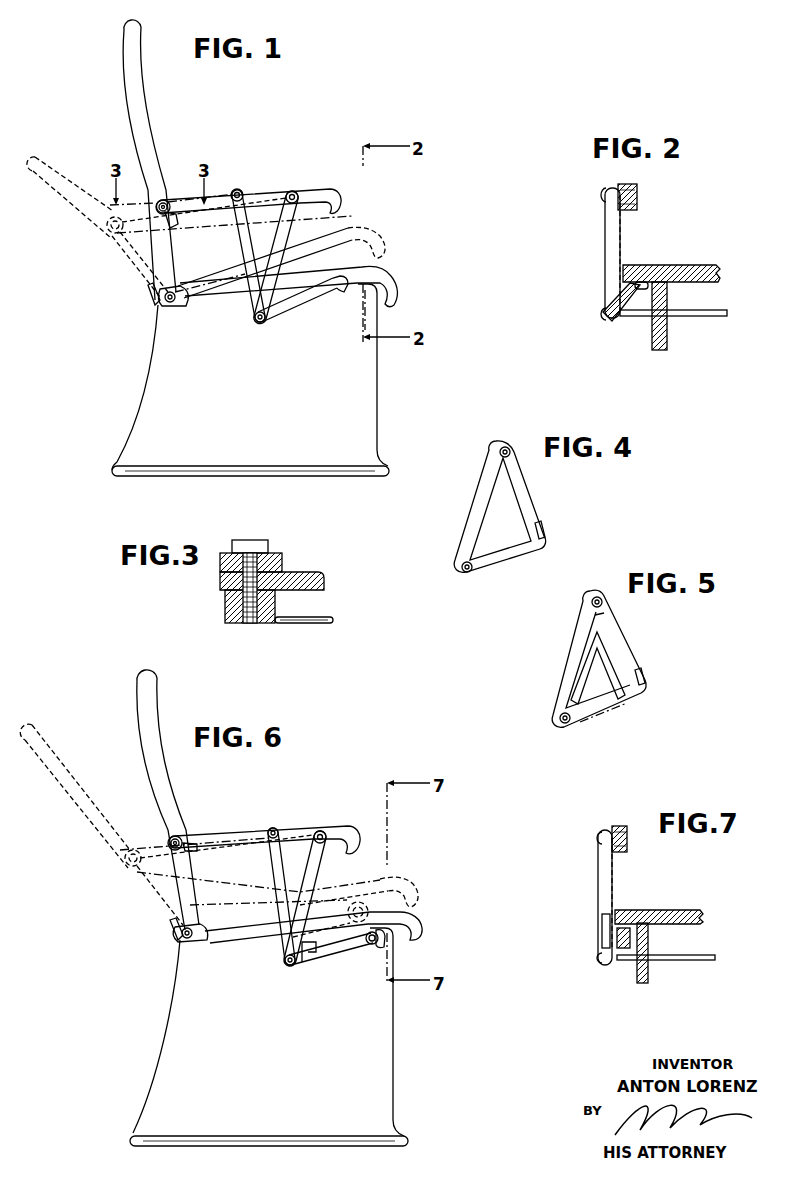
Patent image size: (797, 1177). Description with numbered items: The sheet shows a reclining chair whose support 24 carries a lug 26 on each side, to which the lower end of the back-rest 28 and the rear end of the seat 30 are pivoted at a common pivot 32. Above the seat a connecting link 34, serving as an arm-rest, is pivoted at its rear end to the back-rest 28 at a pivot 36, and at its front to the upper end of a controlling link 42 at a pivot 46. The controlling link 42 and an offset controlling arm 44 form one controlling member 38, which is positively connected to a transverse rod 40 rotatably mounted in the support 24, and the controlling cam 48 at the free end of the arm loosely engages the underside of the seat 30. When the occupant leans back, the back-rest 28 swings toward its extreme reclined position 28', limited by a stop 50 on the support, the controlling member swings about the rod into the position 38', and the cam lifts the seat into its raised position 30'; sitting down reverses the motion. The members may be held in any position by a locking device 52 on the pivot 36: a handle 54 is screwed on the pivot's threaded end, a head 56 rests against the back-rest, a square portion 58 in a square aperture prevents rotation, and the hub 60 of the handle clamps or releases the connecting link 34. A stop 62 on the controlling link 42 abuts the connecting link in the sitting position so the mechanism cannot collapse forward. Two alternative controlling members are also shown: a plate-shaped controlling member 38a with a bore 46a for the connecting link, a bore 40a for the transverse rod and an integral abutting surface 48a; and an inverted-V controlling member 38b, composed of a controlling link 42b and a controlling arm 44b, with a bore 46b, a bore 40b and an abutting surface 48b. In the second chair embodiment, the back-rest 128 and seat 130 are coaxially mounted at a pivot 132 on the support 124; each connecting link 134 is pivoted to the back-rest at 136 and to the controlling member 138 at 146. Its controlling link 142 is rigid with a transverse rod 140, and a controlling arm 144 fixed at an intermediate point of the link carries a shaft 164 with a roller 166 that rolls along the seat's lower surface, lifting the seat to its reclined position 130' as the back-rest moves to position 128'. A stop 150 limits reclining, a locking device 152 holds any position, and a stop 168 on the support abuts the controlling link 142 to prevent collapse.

In FIG. 1, the support 24 is at (382, 387).
In FIG. 2, the support 24 is at (672, 340).
In FIG. 1, the lug 26 is at (180, 285).
In FIG. 1, the back-rest 28 is at (155, 160).
In FIG. 3, the back-rest 28 is at (273, 547).
In FIG. 1, the extreme reclined position of back-rest 28' is at (97, 209).
In FIG. 1, the seat 30 is at (303, 280).
In FIG. 2, the seat 30 is at (680, 256).
In FIG. 1, the reclined position of seat 30' is at (301, 250).
In FIG. 1, the pivot 32 is at (166, 300).
In FIG. 1, the connecting link 34 is at (249, 182).
In FIG. 2, the connecting link 34 is at (637, 184).
In FIG. 3, the connecting link 34 is at (320, 574).
In FIG. 1, the pivot 36 is at (167, 200).
In FIG. 3, the pivot 36 is at (243, 587).
In FIG. 1, the controlling member 38 is at (294, 257).
In FIG. 2, the controlling member 38 is at (587, 253).
In FIG. 1, the swung position of controlling member 38' is at (170, 279).
In FIG. 1, the transverse rod 40 is at (256, 322).
In FIG. 2, the transverse rod 40 is at (707, 310).
In FIG. 1, the controlling link 42 is at (262, 232).
In FIG. 2, the controlling link 42 is at (620, 230).
In FIG. 1, the controlling arm 44 is at (307, 300).
In FIG. 2, the controlling arm 44 is at (630, 295).
In FIG. 1, the pivot 46 is at (296, 193).
In FIG. 2, the pivot 46 is at (603, 197).
In FIG. 1, the controlling cam 48 is at (338, 294).
In FIG. 2, the controlling cam 48 is at (642, 283).
In FIG. 1, the stop 50 is at (148, 290).
In FIG. 1, the locking device 52 is at (160, 220).
In FIG. 3, the locking device 52 is at (220, 615).
In FIG. 1, the handle 54 is at (178, 219).
In FIG. 3, the handle 54 is at (330, 620).
In FIG. 3, the head 56 is at (243, 543).
In FIG. 3, the square portion 58 is at (243, 563).
In FIG. 3, the hub 60 is at (277, 605).
In FIG. 1, the stop 62 is at (284, 188).
In FIG. 4, the controlling member 38a is at (527, 487).
In FIG. 4, the bore 40a is at (473, 572).
In FIG. 4, the bore 46a is at (508, 445).
In FIG. 4, the abutting surface 48a is at (542, 532).
In FIG. 5, the controlling member 38b is at (628, 641).
In FIG. 5, the bore 40b is at (573, 723).
In FIG. 5, the controlling link 42b is at (582, 663).
In FIG. 5, the controlling arm 44b is at (620, 665).
In FIG. 5, the bore 46b is at (608, 581).
In FIG. 5, the abutting surface 48b is at (645, 684).
In FIG. 6, the support 124 is at (156, 1033).
In FIG. 7, the support 124 is at (655, 980).
In FIG. 6, the back-rest 128 is at (174, 800).
In FIG. 6, the reclined position of back-rest 128' is at (101, 824).
In FIG. 6, the seat 130 is at (313, 915).
In FIG. 7, the seat 130 is at (668, 903).
In FIG. 6, the reclined position of seat 130' is at (359, 899).
In FIG. 6, the pivot 132 is at (183, 937).
In FIG. 6, the connecting link 134 is at (217, 830).
In FIG. 7, the connecting link 134 is at (618, 825).
In FIG. 6, the pivot 136 is at (177, 838).
In FIG. 6, the controlling member 138 is at (330, 876).
In FIG. 7, the controlling member 138 is at (596, 877).
In FIG. 6, the transverse rod 140 is at (283, 970).
In FIG. 7, the transverse rod 140 is at (693, 955).
In FIG. 6, the controlling link 142 is at (271, 872).
In FIG. 7, the controlling link 142 is at (612, 874).
In FIG. 6, the controlling arm 144 is at (330, 930).
In FIG. 7, the controlling arm 144 is at (603, 927).
In FIG. 6, the pivot 146 is at (322, 833).
In FIG. 7, the pivot 146 is at (598, 838).
In FIG. 6, the stop 150 is at (172, 923).
In FIG. 6, the locking device 152 is at (193, 848).
In FIG. 6, the shaft 164 is at (367, 943).
In FIG. 7, the shaft 164 is at (600, 957).
In FIG. 6, the roller 166 is at (377, 950).
In FIG. 7, the roller 166 is at (627, 910).
In FIG. 6, the stop 168 is at (310, 958).